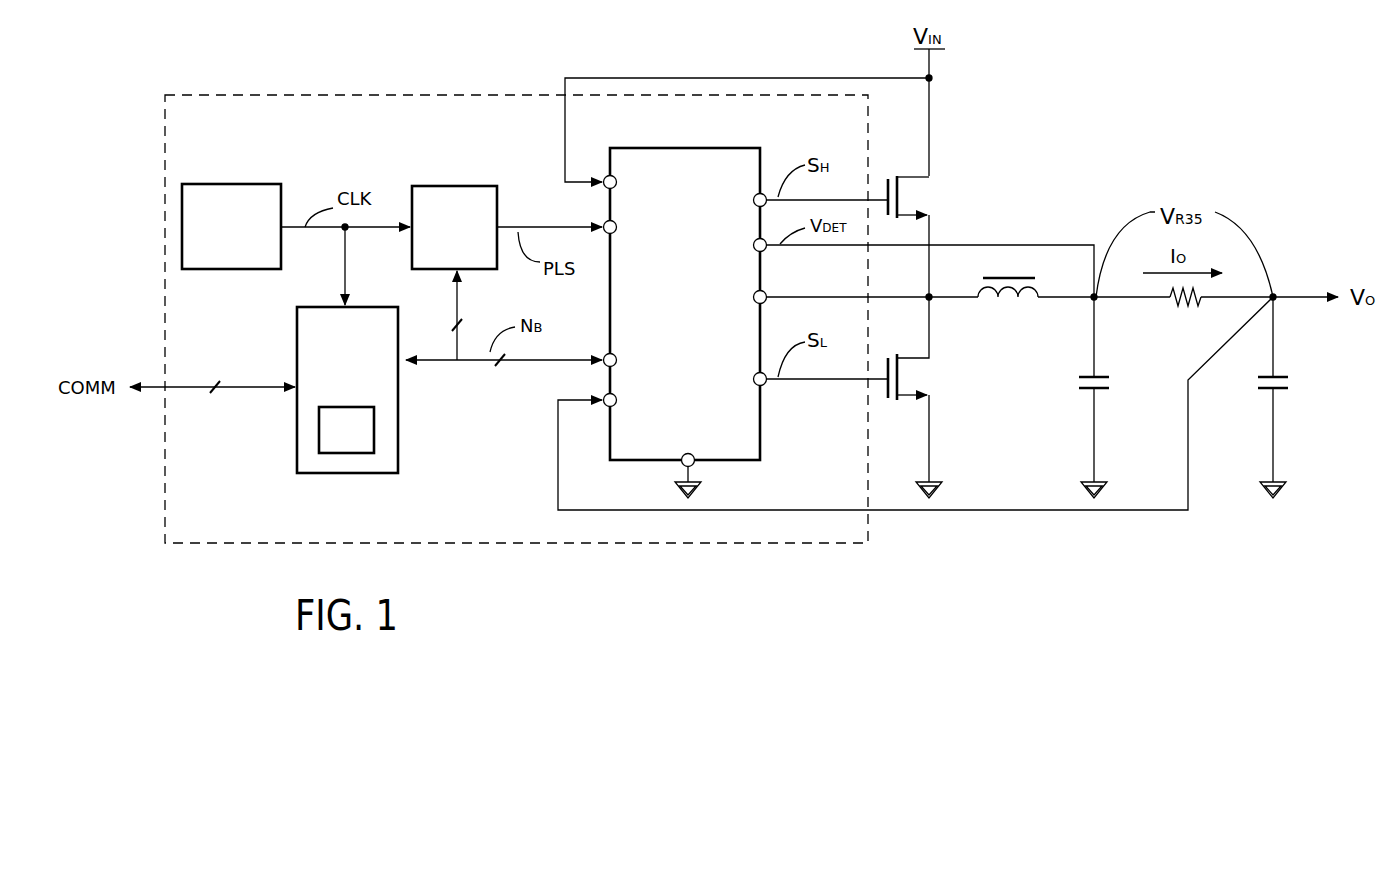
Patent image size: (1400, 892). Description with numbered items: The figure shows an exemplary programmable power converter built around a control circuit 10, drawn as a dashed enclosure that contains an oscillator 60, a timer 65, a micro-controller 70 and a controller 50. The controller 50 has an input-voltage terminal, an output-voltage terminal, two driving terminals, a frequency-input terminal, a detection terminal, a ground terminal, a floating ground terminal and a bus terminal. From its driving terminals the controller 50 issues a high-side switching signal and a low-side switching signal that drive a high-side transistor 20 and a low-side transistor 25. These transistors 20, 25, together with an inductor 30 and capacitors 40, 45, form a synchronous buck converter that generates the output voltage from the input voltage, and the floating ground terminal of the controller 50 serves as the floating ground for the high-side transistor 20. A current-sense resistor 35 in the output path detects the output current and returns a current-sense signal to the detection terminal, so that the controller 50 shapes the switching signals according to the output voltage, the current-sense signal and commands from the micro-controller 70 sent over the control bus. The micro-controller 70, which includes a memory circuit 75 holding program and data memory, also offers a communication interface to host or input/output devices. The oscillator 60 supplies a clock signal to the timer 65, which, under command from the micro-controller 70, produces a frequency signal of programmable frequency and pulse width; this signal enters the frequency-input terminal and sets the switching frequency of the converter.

The control circuit 10 is at (231, 95).
The high-side transistor 20 is at (934, 200).
The low-side transistor 25 is at (934, 374).
The inductor 30 is at (1011, 306).
The resistor 35 is at (1182, 310).
The capacitor 40 is at (1077, 382).
The capacitor 45 is at (1292, 385).
The controller 50 is at (690, 148).
The oscillator 60 is at (240, 184).
The timer 65 is at (450, 186).
The micro-controller (MCU) 70 is at (297, 350).
The memory circuit 75 is at (346, 430).